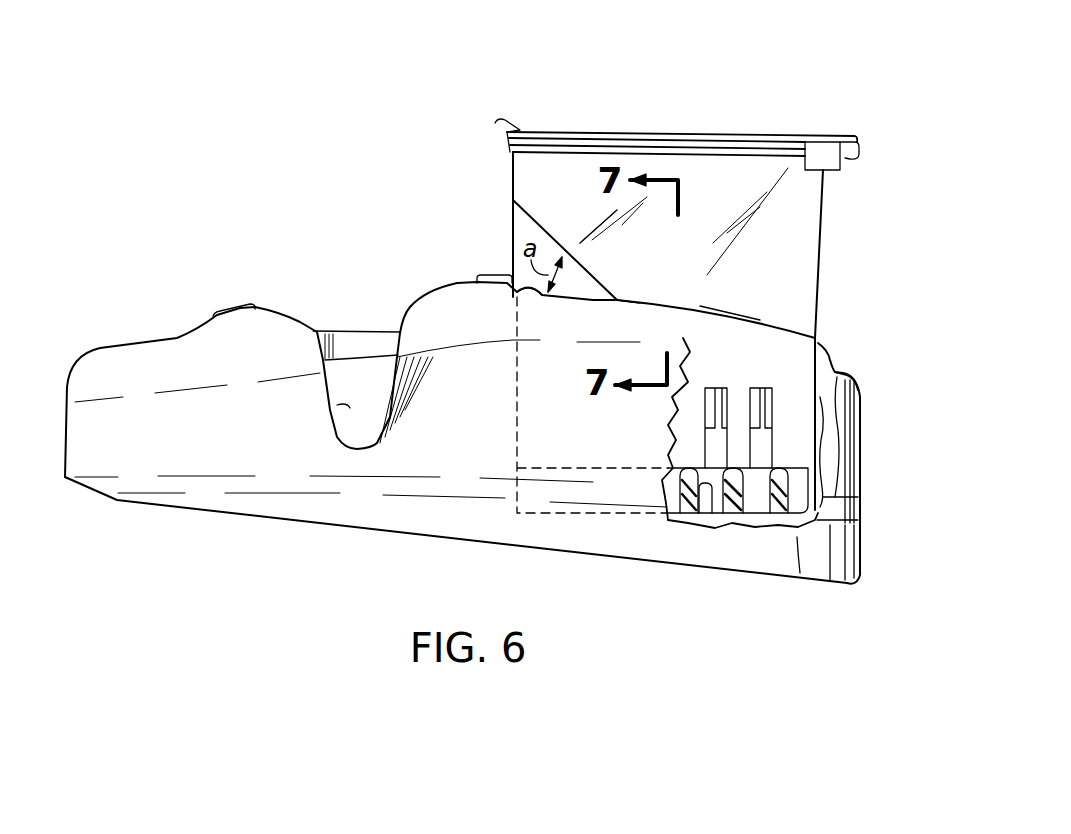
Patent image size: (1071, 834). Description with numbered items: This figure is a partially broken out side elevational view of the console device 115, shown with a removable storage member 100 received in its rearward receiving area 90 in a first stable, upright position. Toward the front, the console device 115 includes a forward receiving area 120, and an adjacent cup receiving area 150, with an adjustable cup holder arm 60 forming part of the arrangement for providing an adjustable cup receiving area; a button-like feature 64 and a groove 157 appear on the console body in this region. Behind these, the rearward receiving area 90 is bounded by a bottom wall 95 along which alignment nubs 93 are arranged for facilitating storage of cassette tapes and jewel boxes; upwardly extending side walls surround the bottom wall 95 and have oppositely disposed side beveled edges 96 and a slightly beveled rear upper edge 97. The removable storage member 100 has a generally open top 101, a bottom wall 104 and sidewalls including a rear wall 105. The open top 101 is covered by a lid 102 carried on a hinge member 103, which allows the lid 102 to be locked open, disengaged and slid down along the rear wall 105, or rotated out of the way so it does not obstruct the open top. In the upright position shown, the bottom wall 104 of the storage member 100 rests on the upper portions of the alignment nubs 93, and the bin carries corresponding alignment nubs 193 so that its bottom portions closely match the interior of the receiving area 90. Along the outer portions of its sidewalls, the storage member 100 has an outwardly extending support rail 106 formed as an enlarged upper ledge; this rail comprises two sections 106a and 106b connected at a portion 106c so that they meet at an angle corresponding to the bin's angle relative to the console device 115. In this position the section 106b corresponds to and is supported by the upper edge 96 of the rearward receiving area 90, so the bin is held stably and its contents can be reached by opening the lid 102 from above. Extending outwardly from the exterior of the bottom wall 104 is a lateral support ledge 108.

The forward receiving area 120 is at (462, 401).
The button 64 is at (230, 307).
The adjustable cup holder arm 60 is at (312, 330).
The cup receiving area 150 is at (376, 332).
The groove 157 is at (337, 402).
The console device 115 is at (435, 246).
The rearward receiving area 90 is at (535, 331).
The removable storage member 100 is at (720, 167).
The rear wall 105 is at (822, 260).
The open top 101 is at (523, 88).
The lid 102 is at (617, 132).
The hinge member 103 is at (863, 98).
The support rail section 106a is at (550, 222).
The support rail 106 is at (655, 241).
The connecting portion of support rail 106c is at (627, 300).
The support rail section 106b is at (748, 317).
The side beveled edges 96 is at (543, 295).
The alignment nubs 93 is at (667, 483).
The alignment nubs 193 is at (738, 398).
The lateral support ledge 108 is at (710, 513).
The bottom wall 95 is at (753, 517).
The bottom wall 104 is at (797, 467).
The rear upper edge 97 is at (835, 370).